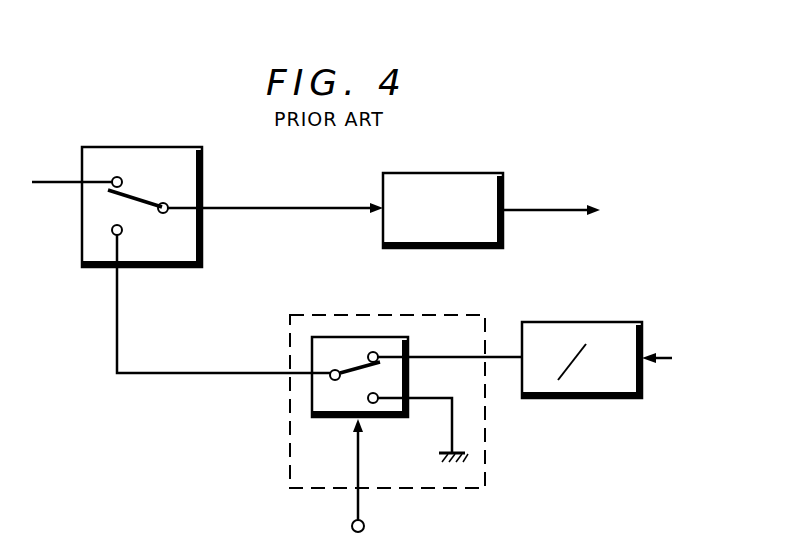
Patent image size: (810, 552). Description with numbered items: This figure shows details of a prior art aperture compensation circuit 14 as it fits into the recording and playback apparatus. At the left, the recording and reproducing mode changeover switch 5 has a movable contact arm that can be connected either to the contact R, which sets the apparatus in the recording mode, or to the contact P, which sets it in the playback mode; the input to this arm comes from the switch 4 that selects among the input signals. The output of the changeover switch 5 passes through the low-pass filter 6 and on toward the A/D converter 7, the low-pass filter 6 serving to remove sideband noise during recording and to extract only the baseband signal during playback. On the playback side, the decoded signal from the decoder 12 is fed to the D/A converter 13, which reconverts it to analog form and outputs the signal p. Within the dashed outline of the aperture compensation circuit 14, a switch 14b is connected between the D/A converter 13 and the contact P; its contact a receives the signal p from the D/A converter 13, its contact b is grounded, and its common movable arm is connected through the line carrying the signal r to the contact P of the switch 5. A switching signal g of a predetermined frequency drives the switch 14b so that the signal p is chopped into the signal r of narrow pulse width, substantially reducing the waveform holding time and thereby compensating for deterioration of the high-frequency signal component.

The switch 4 is at (70, 166).
The recording/reproducing mode changeover switch 5 is at (203, 190).
The low-pass filter 6 is at (504, 197).
The A/D converter 7 is at (577, 214).
The decoder 12 is at (685, 362).
The D/A converter 13 is at (578, 302).
The aperture compensation circuit 14 is at (486, 440).
The switch 14b is at (346, 337).
The contact R is at (124, 178).
The contact P is at (137, 229).
The signal r is at (190, 375).
The contact a is at (379, 352).
The contact b is at (388, 420).
The signal p is at (496, 356).
The control signal g is at (359, 470).